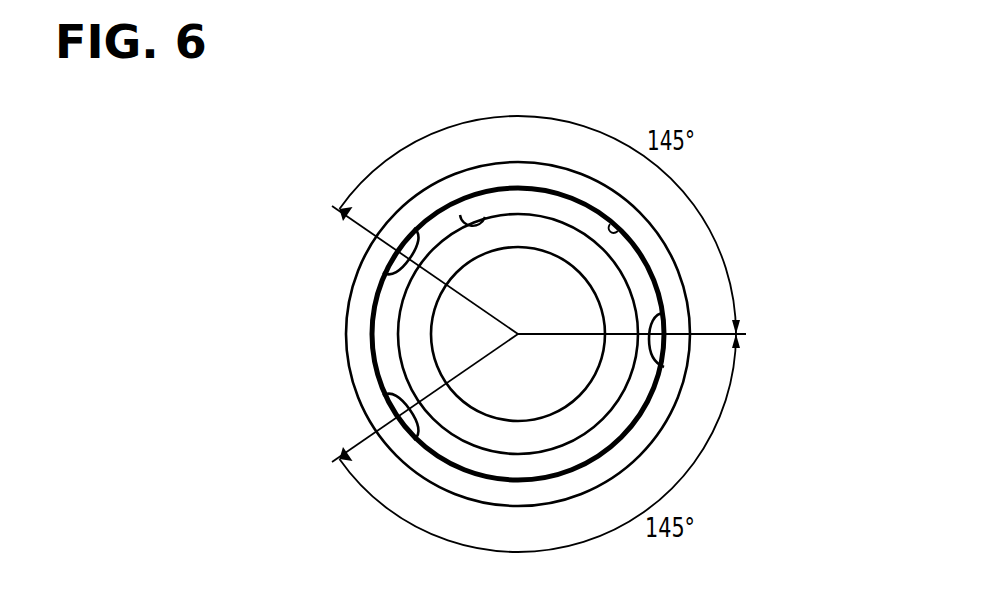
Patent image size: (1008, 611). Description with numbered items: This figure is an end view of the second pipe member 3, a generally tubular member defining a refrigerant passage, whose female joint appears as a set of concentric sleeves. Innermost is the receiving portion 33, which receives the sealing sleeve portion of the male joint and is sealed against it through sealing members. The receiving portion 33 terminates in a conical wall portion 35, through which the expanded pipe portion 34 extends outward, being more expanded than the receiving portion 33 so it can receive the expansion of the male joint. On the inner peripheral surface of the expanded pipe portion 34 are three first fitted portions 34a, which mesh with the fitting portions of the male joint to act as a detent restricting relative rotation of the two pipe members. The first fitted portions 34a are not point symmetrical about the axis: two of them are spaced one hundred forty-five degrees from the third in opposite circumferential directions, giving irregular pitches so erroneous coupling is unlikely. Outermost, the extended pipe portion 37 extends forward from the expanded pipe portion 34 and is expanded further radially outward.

The second pipe member 3 is at (338, 299).
The receiving portion 33 is at (483, 225).
The expanded pipe portion 34 is at (617, 229).
The first fitted portions 34a is at (426, 224).
The conical wall portion 35 is at (640, 283).
The extended pipe portion 37 is at (537, 164).